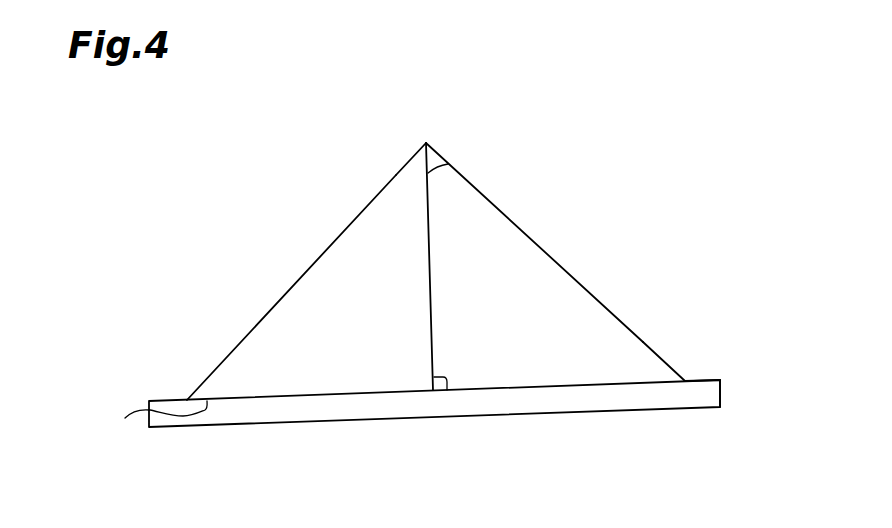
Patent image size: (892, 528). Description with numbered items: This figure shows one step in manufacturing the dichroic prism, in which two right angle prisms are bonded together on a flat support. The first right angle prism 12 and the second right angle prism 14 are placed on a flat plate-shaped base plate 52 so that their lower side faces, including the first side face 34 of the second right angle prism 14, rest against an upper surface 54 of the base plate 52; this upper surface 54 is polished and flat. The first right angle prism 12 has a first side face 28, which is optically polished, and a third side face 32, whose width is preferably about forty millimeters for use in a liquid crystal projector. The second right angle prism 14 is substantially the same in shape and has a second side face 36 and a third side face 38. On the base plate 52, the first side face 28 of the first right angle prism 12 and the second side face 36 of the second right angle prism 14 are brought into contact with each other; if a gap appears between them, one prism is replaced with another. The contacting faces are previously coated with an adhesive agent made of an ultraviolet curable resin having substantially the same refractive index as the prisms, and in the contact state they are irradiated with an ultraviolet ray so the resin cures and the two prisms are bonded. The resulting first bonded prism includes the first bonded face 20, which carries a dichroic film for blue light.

The first right angle prism 12 is at (409, 176).
The second right angle prism 14 is at (617, 343).
The first bonded face 20 is at (447, 168).
The first side face 28 is at (447, 383).
The third side face 32 is at (314, 264).
The first side face 34 is at (666, 386).
The second side face 36 is at (420, 155).
The third side face 38 is at (548, 255).
The base plate 52 is at (627, 398).
The upper surface 54 is at (703, 380).